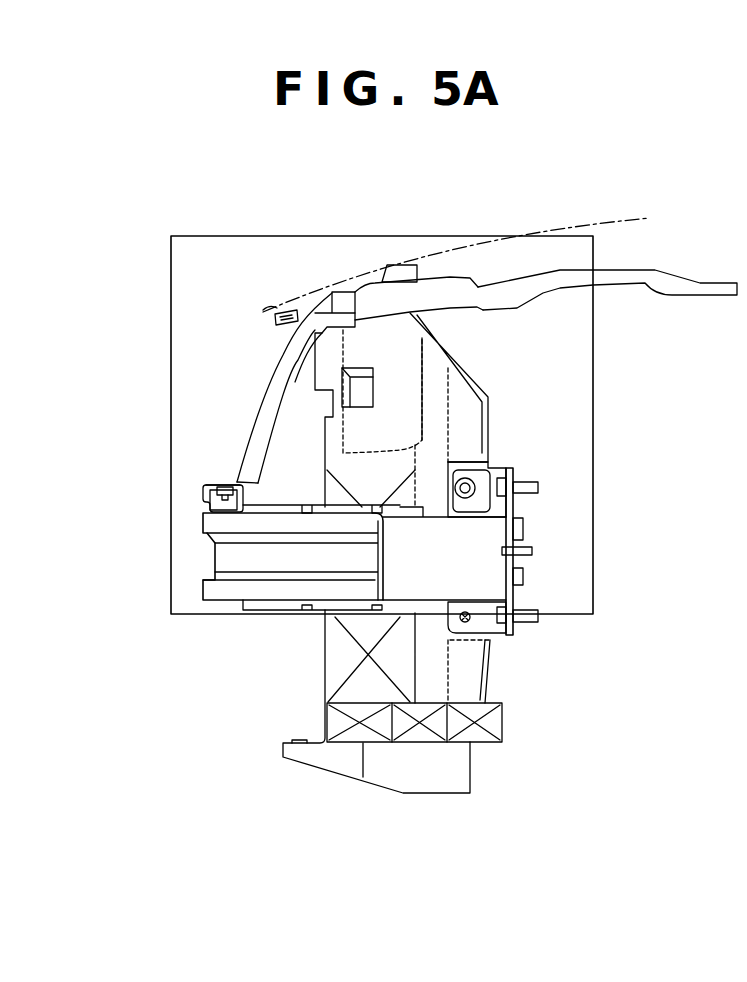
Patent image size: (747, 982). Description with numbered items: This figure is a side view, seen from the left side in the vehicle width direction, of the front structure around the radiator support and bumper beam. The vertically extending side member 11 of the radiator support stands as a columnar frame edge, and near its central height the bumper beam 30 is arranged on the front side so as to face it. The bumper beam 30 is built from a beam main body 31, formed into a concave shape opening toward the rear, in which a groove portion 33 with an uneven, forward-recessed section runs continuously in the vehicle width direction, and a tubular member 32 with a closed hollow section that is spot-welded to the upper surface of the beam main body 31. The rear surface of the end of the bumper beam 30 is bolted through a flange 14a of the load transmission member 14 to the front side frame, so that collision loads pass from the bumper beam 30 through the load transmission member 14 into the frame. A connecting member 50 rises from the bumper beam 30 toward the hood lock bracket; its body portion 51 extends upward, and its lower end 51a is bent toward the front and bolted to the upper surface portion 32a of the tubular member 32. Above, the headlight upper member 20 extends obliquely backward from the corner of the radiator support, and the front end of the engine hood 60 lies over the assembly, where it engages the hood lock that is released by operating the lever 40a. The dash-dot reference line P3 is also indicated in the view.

The side member 11 is at (470, 682).
The load transmission member 14 is at (470, 560).
The flange 14a is at (497, 473).
The headlight upper member 20 is at (665, 271).
The bumper beam 30 is at (221, 570).
The beam main body 31 is at (203, 527).
The tubular member 32 is at (164, 474).
The upper surface portion 32a is at (203, 488).
The groove portion 33 is at (285, 562).
The lever 40a is at (284, 310).
The connecting member 50 is at (208, 388).
The body portion 51 is at (248, 447).
The lower end 51a is at (207, 481).
The engine hood 60 is at (403, 262).
The reference plane P3 is at (450, 236).